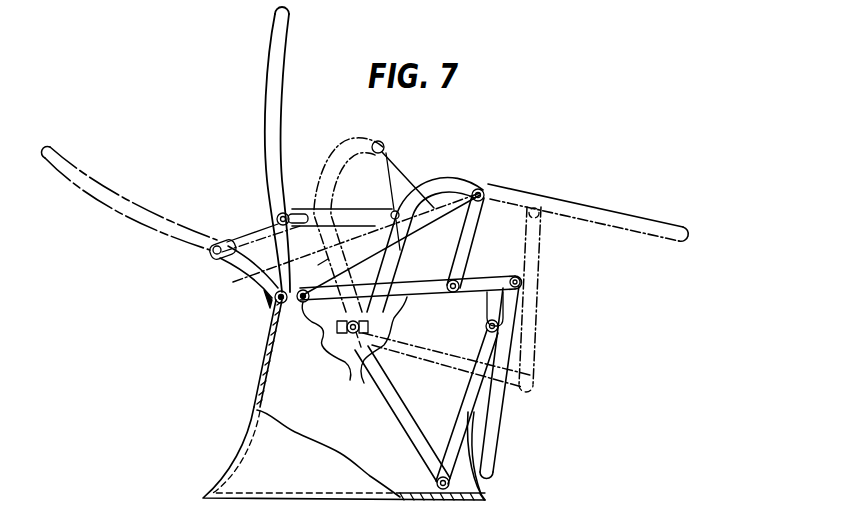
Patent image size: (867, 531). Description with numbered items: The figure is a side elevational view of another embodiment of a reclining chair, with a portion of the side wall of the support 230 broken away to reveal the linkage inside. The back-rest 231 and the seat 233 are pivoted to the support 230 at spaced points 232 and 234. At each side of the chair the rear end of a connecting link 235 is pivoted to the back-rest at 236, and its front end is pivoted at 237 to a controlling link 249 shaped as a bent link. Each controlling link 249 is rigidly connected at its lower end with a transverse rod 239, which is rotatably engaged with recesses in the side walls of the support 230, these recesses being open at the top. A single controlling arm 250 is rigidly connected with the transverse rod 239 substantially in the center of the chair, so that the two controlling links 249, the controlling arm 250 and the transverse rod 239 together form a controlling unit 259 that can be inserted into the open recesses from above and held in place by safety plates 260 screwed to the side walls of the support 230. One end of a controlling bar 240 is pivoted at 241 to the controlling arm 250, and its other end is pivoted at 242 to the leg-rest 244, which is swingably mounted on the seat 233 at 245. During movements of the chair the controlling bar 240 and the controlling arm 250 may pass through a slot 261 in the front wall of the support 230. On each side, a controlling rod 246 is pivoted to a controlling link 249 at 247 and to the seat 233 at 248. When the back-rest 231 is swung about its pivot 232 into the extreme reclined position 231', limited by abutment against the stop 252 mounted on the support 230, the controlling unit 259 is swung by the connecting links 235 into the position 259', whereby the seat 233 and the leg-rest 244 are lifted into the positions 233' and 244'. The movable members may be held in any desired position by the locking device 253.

The support 230 is at (258, 382).
The back-rest 231 is at (294, 149).
The extreme reclined position of the back-rest 231' is at (129, 198).
The pivot point 232 is at (275, 306).
The seat 233 is at (458, 309).
The lifted position of the seat 233' is at (427, 231).
The pivot point 234 is at (314, 305).
The connecting link 235 is at (370, 194).
The pivot 236 is at (278, 216).
The pivot 237 is at (392, 178).
The transverse rod 239 is at (352, 362).
The controlling bar 240 is at (462, 428).
The pivot 241 is at (436, 482).
The pivot 242 is at (486, 327).
The leg-rest 244 is at (472, 343).
The lifted position of the leg-rest 244' is at (588, 203).
The pivot 245 is at (520, 281).
The controlling rod 246 is at (470, 243).
The pivot 247 is at (480, 189).
The pivot 248 is at (460, 278).
The controlling link 249 is at (378, 268).
The controlling arm 250 is at (393, 396).
The stop 252 is at (264, 298).
The locking device 253 is at (301, 215).
The controlling unit 259 is at (356, 244).
The swung position of the controlling unit 259' is at (264, 279).
The safety plate 260 is at (325, 350).
The slot 261 is at (470, 450).